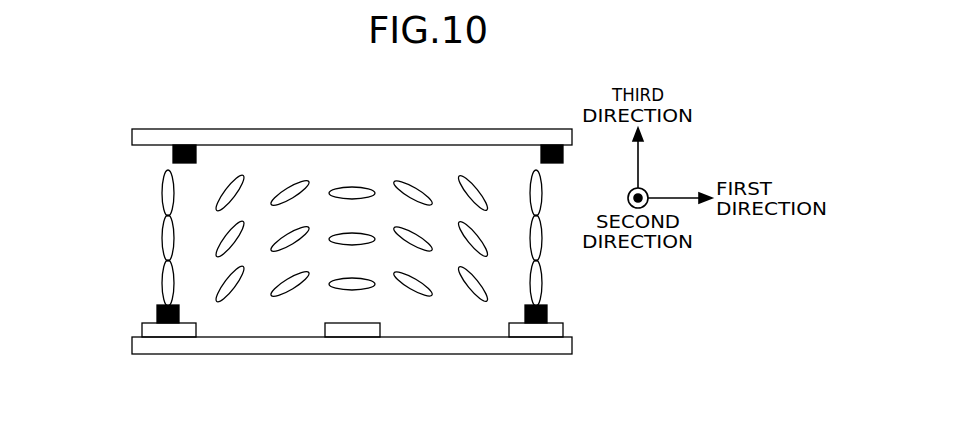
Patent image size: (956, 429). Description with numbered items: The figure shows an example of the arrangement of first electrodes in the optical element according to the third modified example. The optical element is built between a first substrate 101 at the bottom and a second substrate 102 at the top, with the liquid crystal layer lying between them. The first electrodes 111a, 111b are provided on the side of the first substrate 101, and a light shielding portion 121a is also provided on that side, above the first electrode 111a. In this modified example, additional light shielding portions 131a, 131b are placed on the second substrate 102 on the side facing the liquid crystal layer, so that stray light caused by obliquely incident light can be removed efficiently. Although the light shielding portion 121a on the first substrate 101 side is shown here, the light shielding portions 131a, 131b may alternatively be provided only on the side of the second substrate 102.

The first substrate 101 is at (132, 345).
The second substrate 102 is at (132, 134).
The first electrode 111a is at (142, 329).
The first electrode 111b is at (563, 330).
The light shielding portion 121a is at (157, 313).
The light shielding portion 131a is at (172, 154).
The light shielding portion 131b is at (557, 163).